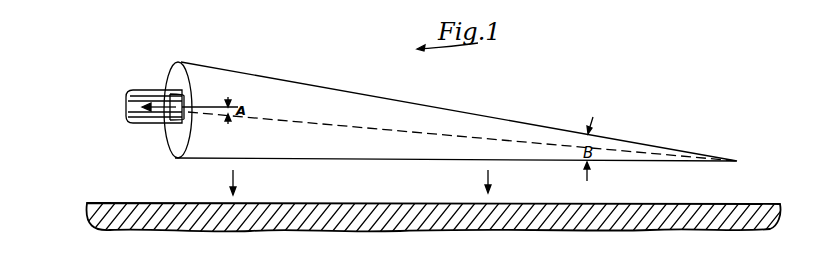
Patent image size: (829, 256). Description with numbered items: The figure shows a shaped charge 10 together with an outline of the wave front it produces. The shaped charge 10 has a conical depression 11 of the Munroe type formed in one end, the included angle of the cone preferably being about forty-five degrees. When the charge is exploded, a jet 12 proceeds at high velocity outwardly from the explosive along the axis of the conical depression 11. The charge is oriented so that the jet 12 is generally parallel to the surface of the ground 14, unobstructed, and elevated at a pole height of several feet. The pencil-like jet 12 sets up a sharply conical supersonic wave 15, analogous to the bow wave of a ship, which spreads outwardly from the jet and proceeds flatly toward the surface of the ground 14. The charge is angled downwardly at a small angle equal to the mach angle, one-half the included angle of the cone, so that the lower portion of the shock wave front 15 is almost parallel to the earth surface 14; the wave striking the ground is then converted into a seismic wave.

The shaped charge 10 is at (147, 124).
The conical depression 11 is at (188, 122).
The jet 12 is at (330, 103).
The surface of the ground 14 is at (300, 203).
The supersonic wave 15 is at (378, 97).